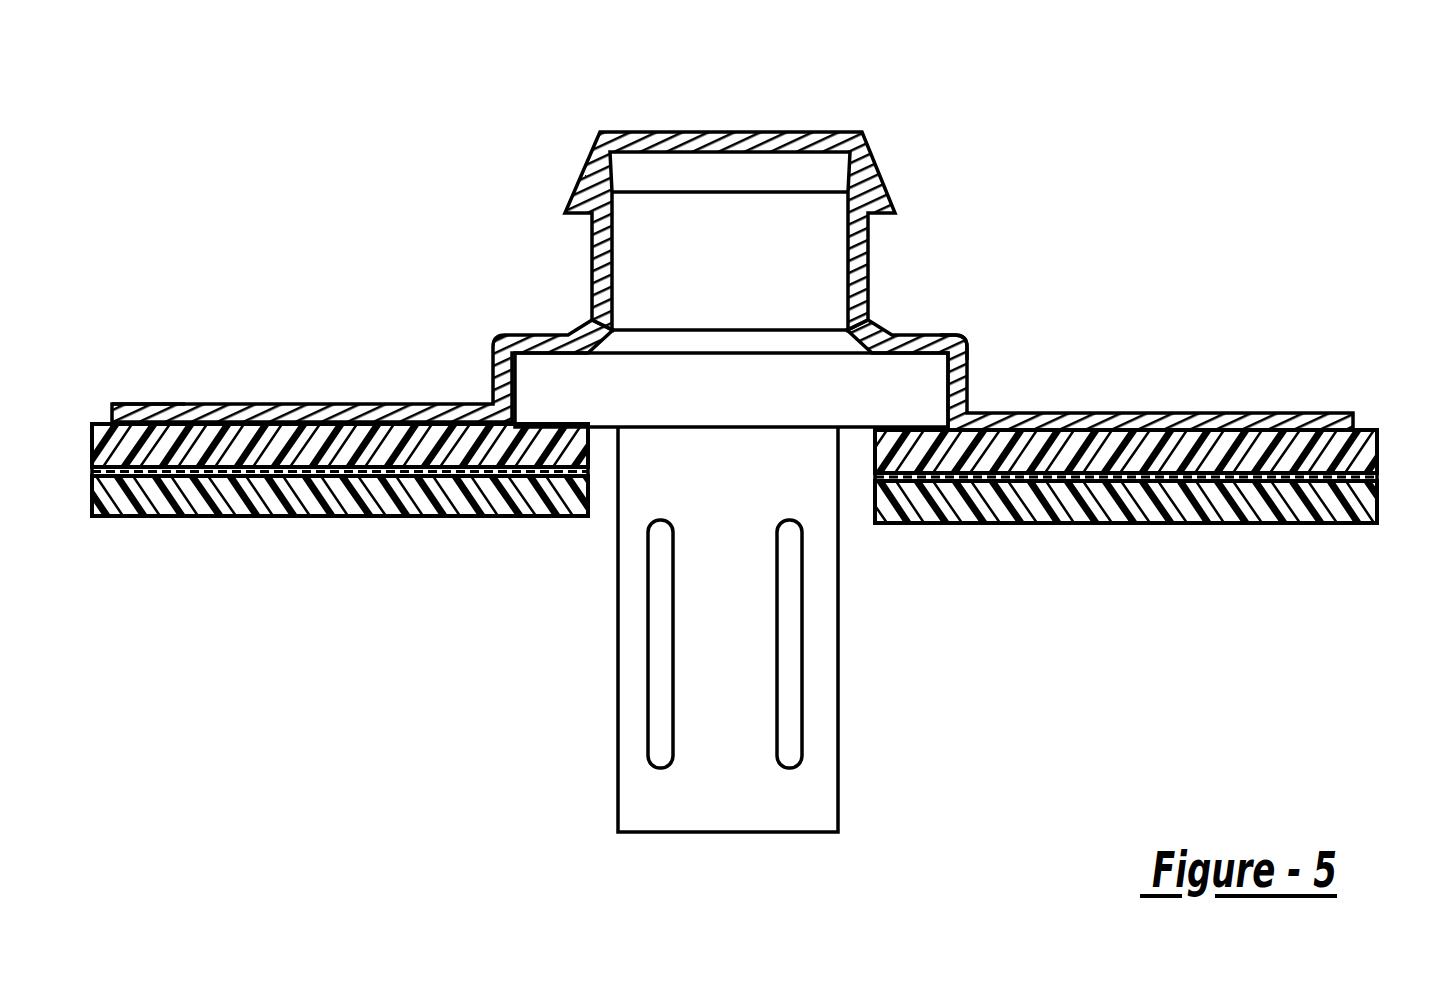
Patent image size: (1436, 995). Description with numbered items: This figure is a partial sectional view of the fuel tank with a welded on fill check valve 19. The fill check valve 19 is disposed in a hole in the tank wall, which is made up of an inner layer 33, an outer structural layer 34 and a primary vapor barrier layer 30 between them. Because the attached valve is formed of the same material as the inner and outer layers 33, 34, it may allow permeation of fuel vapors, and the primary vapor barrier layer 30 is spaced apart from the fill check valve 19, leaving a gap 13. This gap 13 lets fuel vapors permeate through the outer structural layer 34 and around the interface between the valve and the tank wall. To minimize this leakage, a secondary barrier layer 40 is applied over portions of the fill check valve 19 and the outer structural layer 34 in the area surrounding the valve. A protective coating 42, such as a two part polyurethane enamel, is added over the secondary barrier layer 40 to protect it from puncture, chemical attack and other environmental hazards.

The gap 13 is at (602, 490).
The fill check valve 19 is at (818, 138).
The primary vapor barrier layer 30 is at (128, 462).
The inner layer 33 is at (318, 510).
The outer structural layer 34 is at (1303, 440).
The secondary barrier layer 40 is at (350, 406).
The protective coating 42 is at (176, 403).